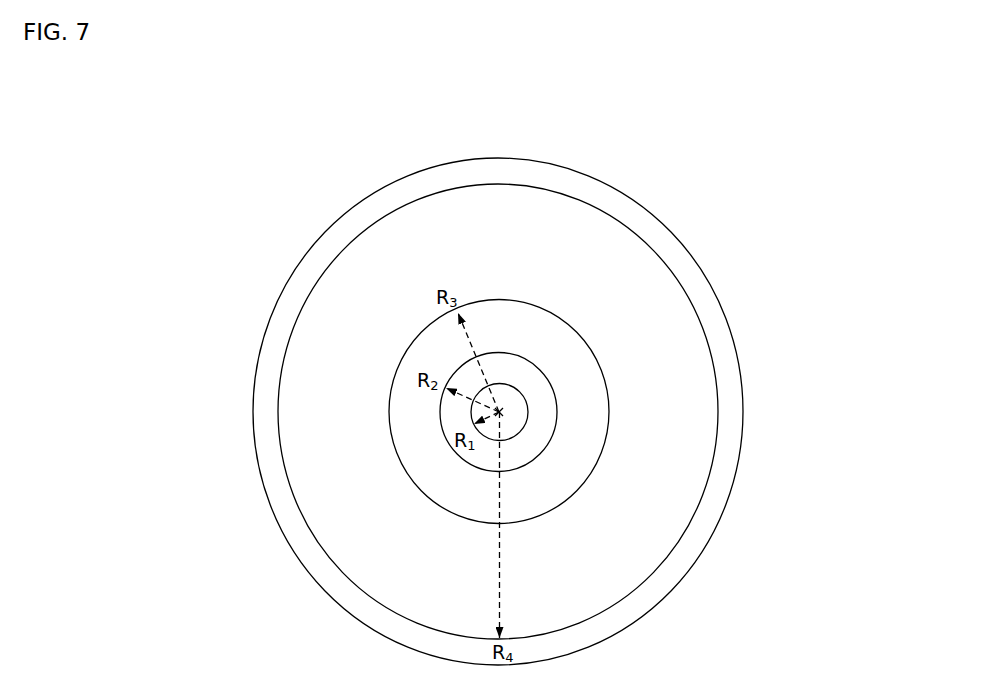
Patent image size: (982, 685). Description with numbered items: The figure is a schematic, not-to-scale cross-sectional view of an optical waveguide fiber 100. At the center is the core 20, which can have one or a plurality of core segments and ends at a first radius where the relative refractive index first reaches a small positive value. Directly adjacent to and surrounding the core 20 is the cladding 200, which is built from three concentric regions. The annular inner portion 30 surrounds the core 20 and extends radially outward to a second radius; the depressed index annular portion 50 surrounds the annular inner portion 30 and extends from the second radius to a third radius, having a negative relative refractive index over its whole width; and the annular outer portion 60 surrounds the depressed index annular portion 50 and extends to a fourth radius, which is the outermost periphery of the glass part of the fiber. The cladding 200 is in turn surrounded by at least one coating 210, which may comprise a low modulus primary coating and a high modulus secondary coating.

The optical waveguide fiber 100 is at (212, 291).
The coating 210 is at (282, 503).
The annular outer portion 60 is at (630, 340).
The depressed index annular portion 50 is at (555, 379).
The annular inner portion 30 is at (537, 415).
The core 20 is at (512, 420).
The cladding 200 is at (860, 273).